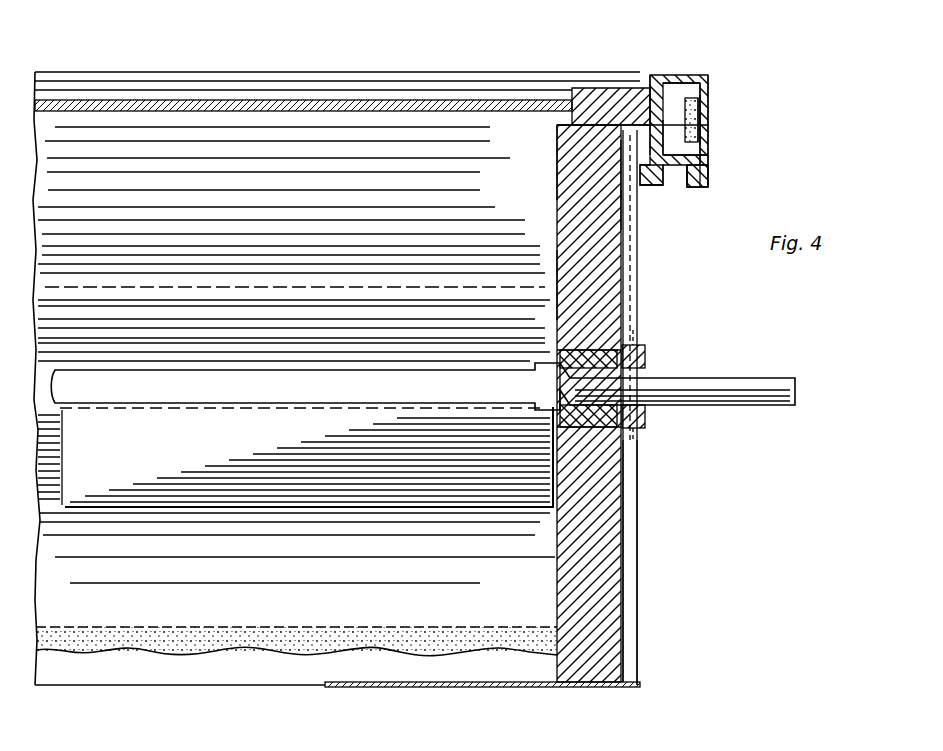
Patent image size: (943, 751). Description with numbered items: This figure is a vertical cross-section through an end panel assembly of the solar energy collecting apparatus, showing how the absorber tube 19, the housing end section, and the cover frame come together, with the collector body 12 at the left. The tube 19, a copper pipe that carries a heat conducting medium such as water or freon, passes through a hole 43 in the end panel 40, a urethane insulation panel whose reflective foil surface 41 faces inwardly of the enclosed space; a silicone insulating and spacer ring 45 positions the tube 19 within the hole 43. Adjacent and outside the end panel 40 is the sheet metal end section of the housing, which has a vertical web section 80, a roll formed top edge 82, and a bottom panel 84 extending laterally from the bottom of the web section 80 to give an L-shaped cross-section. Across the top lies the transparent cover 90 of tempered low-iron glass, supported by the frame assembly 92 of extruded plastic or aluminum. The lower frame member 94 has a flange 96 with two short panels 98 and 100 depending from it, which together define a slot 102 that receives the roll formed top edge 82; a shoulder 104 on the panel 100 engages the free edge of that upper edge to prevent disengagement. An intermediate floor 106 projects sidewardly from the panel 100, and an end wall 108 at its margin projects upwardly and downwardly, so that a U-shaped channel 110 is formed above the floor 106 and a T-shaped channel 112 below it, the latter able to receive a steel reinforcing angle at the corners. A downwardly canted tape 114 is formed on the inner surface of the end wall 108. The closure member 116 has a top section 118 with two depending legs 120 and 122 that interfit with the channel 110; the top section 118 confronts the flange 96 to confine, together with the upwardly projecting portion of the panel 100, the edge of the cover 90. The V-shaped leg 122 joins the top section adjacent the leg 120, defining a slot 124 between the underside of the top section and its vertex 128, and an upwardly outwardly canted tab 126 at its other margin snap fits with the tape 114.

The wall body 12 is at (252, 142).
The tube 19 is at (782, 368).
The end panel 40 is at (622, 525).
The reflective foil surface 41 is at (552, 294).
The hole 43 is at (648, 360).
The silicone insulating and spacer ring 45 is at (640, 425).
The web section 80 is at (640, 624).
The roll formed top edge 82 is at (638, 200).
The bottom panel 84 is at (442, 688).
The transparent cover 90 is at (420, 98).
The frame assembly 92 is at (722, 250).
The lower frame member 94 is at (712, 181).
The flange 96 is at (560, 114).
The short panel 98 is at (600, 165).
The panel 100 is at (665, 92).
The slot 102 is at (600, 190).
The shoulder 104 is at (655, 186).
The intermediate floor 106 is at (708, 162).
The end wall 108 is at (708, 118).
The U-shaped channel 110 is at (710, 125).
The T-shaped channel 112 is at (680, 178).
The downwardly canted tape 114 is at (702, 142).
The closure member 116 is at (652, 80).
The top section 118 is at (602, 88).
The leg 120 is at (688, 86).
The V-shaped leg 122 is at (703, 112).
The slot 124 is at (692, 96).
The upwardly outwardly canted tab 126 is at (706, 150).
The vertex 128 is at (700, 100).